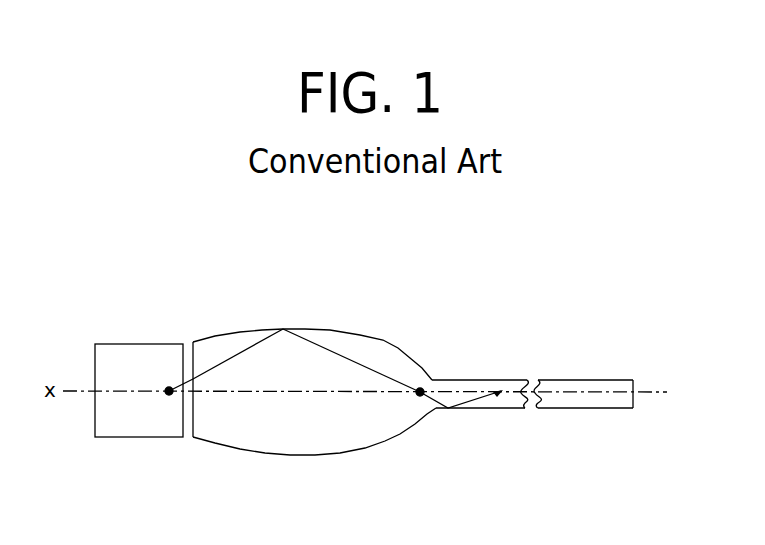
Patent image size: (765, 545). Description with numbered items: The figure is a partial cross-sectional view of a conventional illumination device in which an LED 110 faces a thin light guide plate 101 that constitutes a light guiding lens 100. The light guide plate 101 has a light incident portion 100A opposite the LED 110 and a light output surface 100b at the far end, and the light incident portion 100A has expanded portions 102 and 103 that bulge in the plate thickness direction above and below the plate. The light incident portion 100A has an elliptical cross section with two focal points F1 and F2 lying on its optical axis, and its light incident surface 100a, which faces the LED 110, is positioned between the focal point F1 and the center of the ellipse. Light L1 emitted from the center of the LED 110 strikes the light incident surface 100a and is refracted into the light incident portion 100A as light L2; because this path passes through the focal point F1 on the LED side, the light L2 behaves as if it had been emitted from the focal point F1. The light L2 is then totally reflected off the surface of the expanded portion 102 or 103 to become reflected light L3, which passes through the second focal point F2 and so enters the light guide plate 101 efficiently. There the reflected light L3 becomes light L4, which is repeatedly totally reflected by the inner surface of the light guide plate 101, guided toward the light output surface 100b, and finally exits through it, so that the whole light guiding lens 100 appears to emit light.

The LED 110 is at (117, 344).
The light incident portion 100A is at (327, 396).
The expanded portion 102 is at (345, 334).
The expanded portion 103 is at (312, 457).
The light incident surface 100a is at (195, 416).
The light guiding lens 100 is at (552, 389).
The light guide plate 101 is at (566, 409).
The light output surface 100b is at (635, 381).
The light L1 is at (178, 385).
The light L2 is at (242, 352).
The reflected light L3 is at (352, 362).
The light L4 is at (480, 404).
The focal point F1 is at (161, 407).
The focal point F2 is at (404, 405).